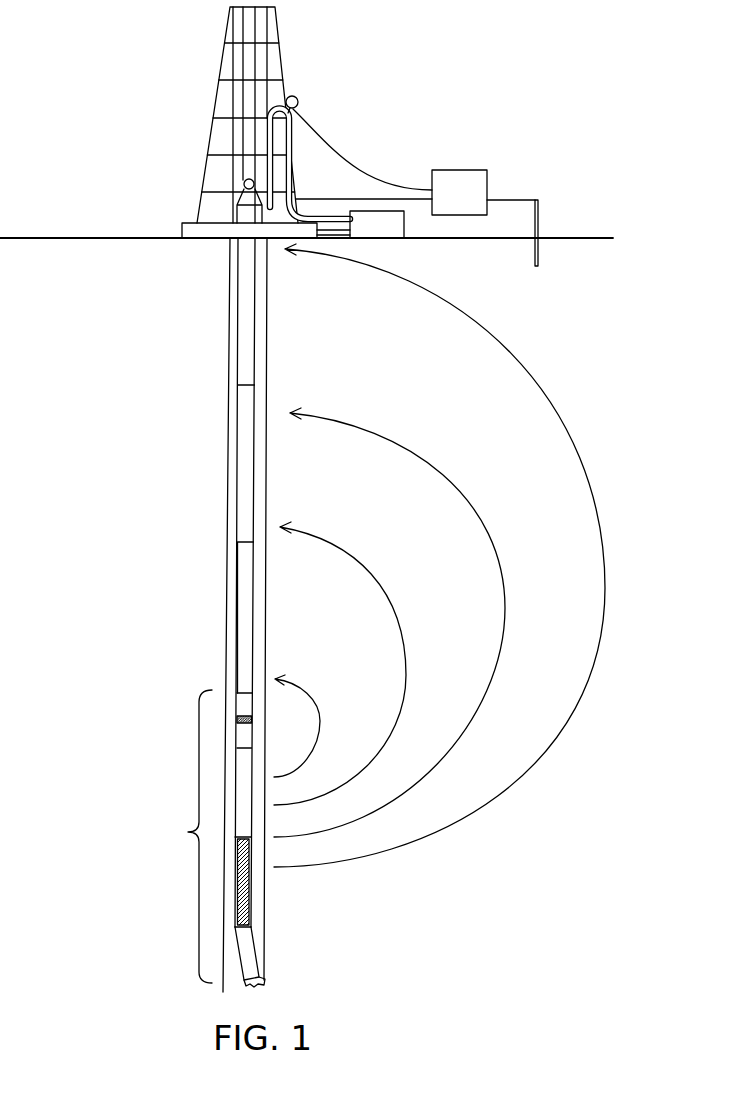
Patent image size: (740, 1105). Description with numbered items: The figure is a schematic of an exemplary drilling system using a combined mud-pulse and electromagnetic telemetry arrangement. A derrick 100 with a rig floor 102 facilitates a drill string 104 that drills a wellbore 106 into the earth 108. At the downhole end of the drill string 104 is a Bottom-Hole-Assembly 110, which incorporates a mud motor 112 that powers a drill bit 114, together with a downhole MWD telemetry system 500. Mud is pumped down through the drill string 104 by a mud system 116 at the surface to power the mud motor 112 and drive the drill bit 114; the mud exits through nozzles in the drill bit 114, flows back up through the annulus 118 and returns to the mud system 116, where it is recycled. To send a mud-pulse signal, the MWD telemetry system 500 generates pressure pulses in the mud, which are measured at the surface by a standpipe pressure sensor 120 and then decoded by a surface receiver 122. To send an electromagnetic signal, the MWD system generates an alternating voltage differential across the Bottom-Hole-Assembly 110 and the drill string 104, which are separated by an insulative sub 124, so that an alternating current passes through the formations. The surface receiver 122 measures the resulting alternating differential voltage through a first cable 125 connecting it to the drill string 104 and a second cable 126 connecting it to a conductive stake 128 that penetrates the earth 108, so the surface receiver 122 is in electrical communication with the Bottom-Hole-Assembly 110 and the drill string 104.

The derrick 100 is at (288, 43).
The rig floor 102 is at (182, 218).
The drill string 104 is at (245, 305).
The wellbore 106 is at (230, 340).
The earth 108 is at (98, 252).
The Bottom-Hole-Assembly (BHA) 110 is at (179, 836).
The mud motor 112 is at (230, 847).
The drill bit 114 is at (235, 953).
The mud system 116 is at (367, 207).
The annulus 118 is at (233, 567).
The standpipe pressure sensor 120 is at (305, 98).
The surface receiver 122 is at (478, 168).
The insulative sub 124 is at (235, 718).
The first cable 125 is at (328, 197).
The second cable 126 is at (523, 197).
The conductive stake 128 is at (543, 227).
The downhole MWD telemetry system 500 is at (220, 747).